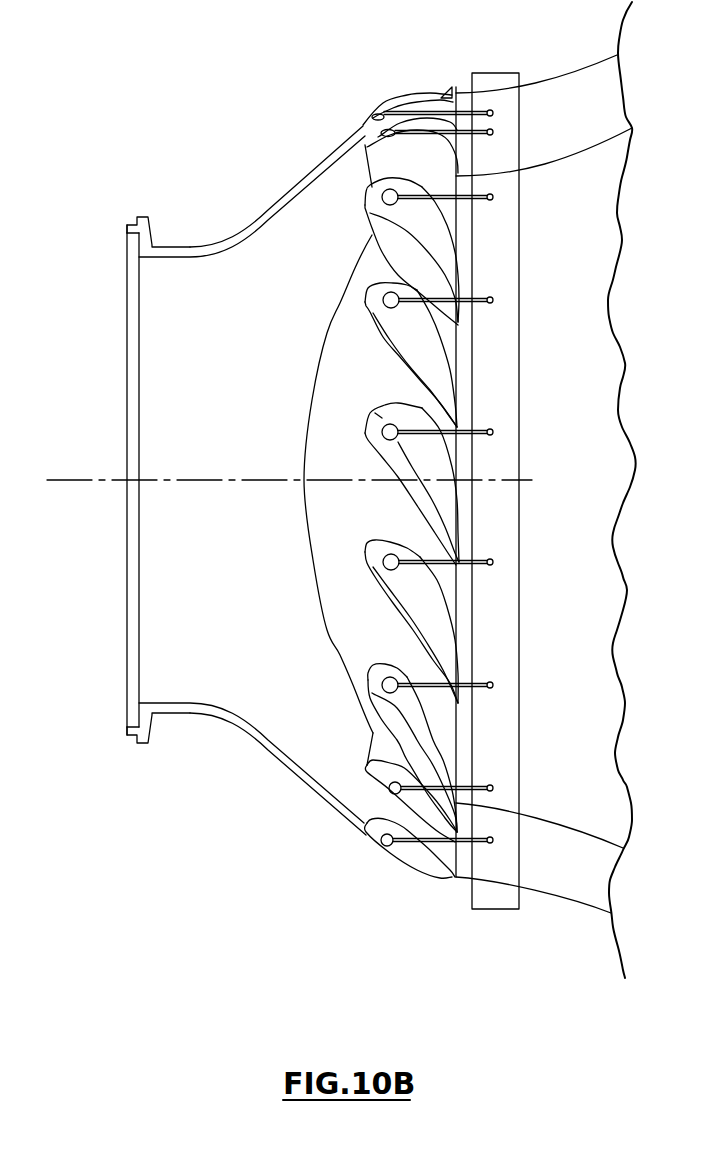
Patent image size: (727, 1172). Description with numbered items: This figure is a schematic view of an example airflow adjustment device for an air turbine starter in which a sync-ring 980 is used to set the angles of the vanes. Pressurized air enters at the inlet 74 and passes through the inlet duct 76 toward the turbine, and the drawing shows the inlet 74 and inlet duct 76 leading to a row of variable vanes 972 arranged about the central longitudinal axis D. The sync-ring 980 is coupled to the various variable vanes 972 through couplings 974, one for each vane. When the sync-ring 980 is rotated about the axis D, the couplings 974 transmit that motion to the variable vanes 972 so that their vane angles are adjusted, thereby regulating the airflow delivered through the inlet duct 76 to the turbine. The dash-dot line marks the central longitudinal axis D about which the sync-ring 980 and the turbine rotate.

The inlet 74 is at (113, 577).
The inlet duct 76 is at (254, 693).
The variable vanes 972 is at (378, 408).
The couplings 974 is at (476, 205).
The sync-ring 980 is at (484, 84).
The central longitudinal axis D is at (69, 481).